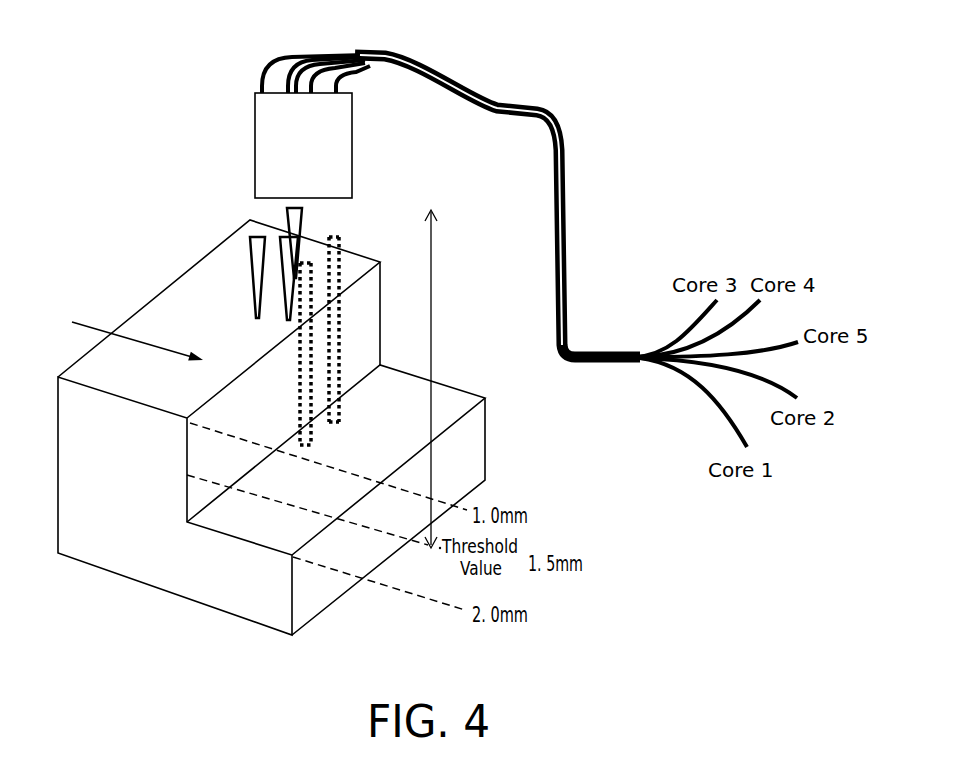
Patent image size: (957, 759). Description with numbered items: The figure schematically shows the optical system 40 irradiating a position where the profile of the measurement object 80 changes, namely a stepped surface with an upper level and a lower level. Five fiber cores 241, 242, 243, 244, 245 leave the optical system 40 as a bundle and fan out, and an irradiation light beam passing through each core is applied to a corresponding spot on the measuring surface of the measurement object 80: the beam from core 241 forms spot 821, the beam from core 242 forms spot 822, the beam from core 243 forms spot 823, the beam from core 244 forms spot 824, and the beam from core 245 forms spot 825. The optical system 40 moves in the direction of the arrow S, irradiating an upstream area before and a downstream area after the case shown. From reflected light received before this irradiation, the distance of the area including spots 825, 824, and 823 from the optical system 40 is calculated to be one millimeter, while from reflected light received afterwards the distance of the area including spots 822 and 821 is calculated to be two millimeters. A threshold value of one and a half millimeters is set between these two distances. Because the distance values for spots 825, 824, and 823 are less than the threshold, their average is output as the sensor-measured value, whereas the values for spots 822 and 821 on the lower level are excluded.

The optical system 40 is at (255, 142).
The measurement object 80 is at (157, 307).
The core 241 is at (337, 78).
The core 242 is at (320, 60).
The core 243 is at (288, 58).
The core 244 is at (277, 84).
The core 245 is at (267, 74).
The spot 821 is at (332, 422).
The spot 822 is at (307, 445).
The spot 823 is at (285, 322).
The spot 824 is at (295, 290).
The spot 825 is at (252, 321).
The arrow S is at (87, 322).